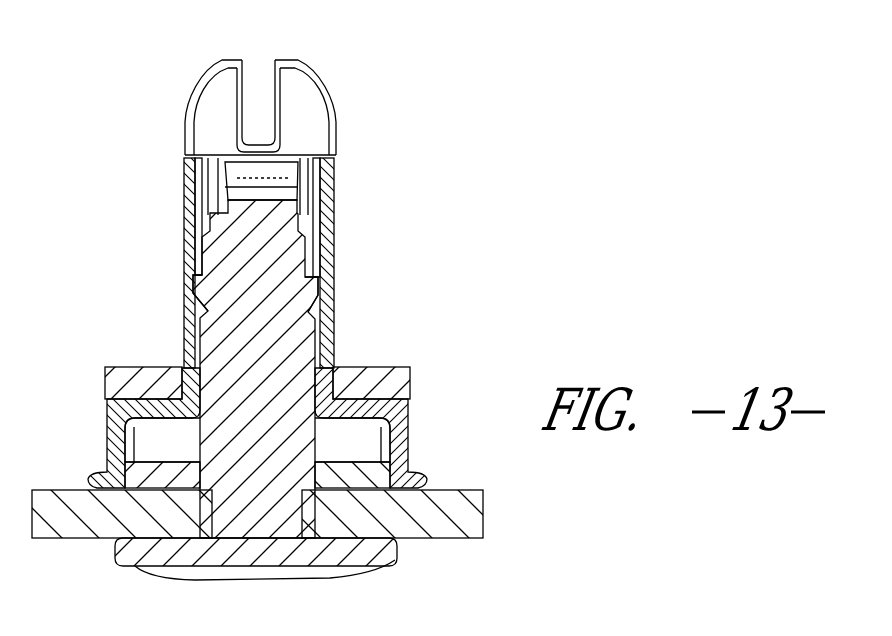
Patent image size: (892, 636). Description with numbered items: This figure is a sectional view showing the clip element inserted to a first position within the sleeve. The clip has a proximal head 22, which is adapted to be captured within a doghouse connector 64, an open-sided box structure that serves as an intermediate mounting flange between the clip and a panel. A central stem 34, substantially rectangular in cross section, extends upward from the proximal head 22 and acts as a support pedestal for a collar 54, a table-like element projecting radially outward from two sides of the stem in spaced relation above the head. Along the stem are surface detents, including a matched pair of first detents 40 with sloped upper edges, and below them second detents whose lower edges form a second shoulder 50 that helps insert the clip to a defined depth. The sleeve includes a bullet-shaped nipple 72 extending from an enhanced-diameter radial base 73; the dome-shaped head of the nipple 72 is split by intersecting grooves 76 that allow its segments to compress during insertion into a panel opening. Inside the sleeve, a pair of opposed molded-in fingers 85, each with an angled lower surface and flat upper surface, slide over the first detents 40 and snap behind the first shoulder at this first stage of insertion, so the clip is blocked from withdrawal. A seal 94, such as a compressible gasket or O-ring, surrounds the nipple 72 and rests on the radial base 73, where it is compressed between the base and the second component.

The proximal head 22 is at (400, 550).
The central stem 34 is at (307, 347).
The first detents 40 is at (207, 248).
The second shoulder 50 is at (183, 343).
The collar 54 is at (353, 460).
The doghouse connector 64 is at (483, 513).
The nipple 72 is at (333, 200).
The radial base 73 is at (420, 417).
The grooves 76 is at (258, 75).
The fingers 85 is at (207, 287).
The seal 94 is at (127, 363).